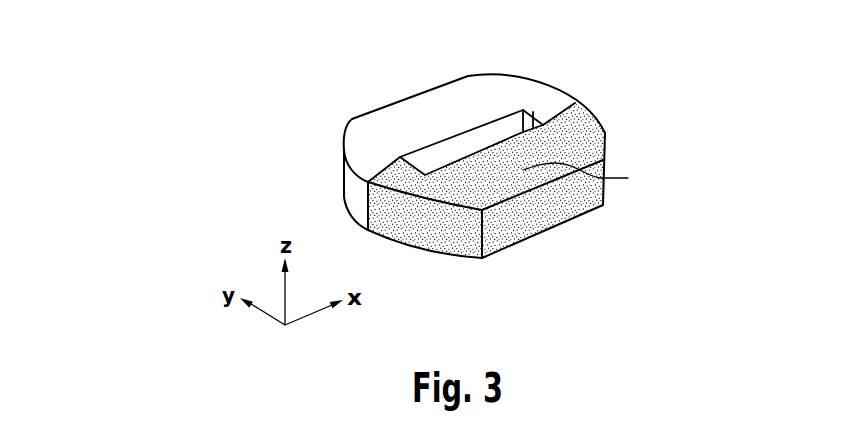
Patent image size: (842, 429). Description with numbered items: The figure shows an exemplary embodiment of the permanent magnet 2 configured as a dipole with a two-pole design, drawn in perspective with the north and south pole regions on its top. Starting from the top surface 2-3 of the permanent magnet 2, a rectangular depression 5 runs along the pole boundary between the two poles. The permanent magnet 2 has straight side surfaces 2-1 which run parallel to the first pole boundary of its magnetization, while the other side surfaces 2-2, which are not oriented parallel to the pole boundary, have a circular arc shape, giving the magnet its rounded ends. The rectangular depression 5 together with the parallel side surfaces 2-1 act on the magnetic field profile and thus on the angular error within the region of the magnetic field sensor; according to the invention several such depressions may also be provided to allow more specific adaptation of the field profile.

The permanent magnet 2 is at (400, 83).
The rectangular depression 5 is at (513, 123).
The side surfaces 2-1 is at (550, 207).
The other side surfaces 2-2 is at (434, 224).
The top surface 2-3 is at (587, 138).